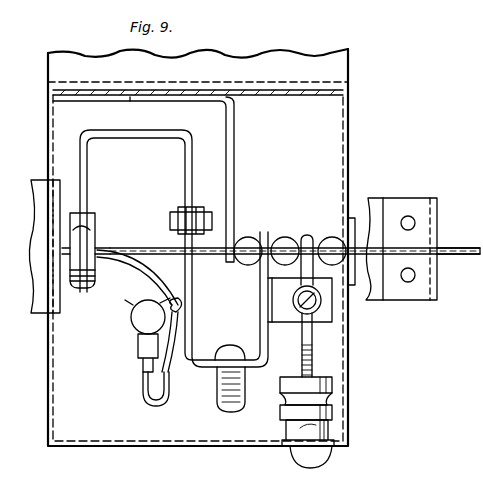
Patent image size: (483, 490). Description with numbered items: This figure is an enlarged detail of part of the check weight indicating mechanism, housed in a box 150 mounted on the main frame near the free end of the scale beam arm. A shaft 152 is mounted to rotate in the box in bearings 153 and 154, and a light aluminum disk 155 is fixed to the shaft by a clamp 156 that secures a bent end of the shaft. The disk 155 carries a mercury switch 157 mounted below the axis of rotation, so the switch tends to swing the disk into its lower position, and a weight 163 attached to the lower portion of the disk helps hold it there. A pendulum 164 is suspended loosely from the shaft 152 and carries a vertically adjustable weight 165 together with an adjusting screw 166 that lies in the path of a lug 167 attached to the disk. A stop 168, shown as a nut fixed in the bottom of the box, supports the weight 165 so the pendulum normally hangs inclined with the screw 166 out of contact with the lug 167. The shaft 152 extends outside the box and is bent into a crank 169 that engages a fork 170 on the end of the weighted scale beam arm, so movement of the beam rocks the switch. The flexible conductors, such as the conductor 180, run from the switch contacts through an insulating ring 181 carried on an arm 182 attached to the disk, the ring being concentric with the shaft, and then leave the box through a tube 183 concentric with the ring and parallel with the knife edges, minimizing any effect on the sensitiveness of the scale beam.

The box 150 is at (348, 130).
The shaft 152 is at (222, 262).
The bearing 153 is at (240, 240).
The bearing 154 is at (348, 236).
The disk 155 is at (182, 275).
The clamp 156 is at (200, 207).
The mercury switch 157 is at (140, 320).
The weight 163 is at (248, 396).
The pendulum 164 is at (318, 342).
The weight 165 is at (333, 388).
The adjusting screw 166 is at (294, 304).
The lug 167 is at (330, 312).
The stop 168 is at (334, 430).
The crank 169 is at (456, 258).
The fork 170 is at (398, 205).
The conductor 180 is at (160, 392).
The insulating ring 181 is at (90, 228).
The arm 182 is at (118, 140).
The tube 183 is at (57, 178).